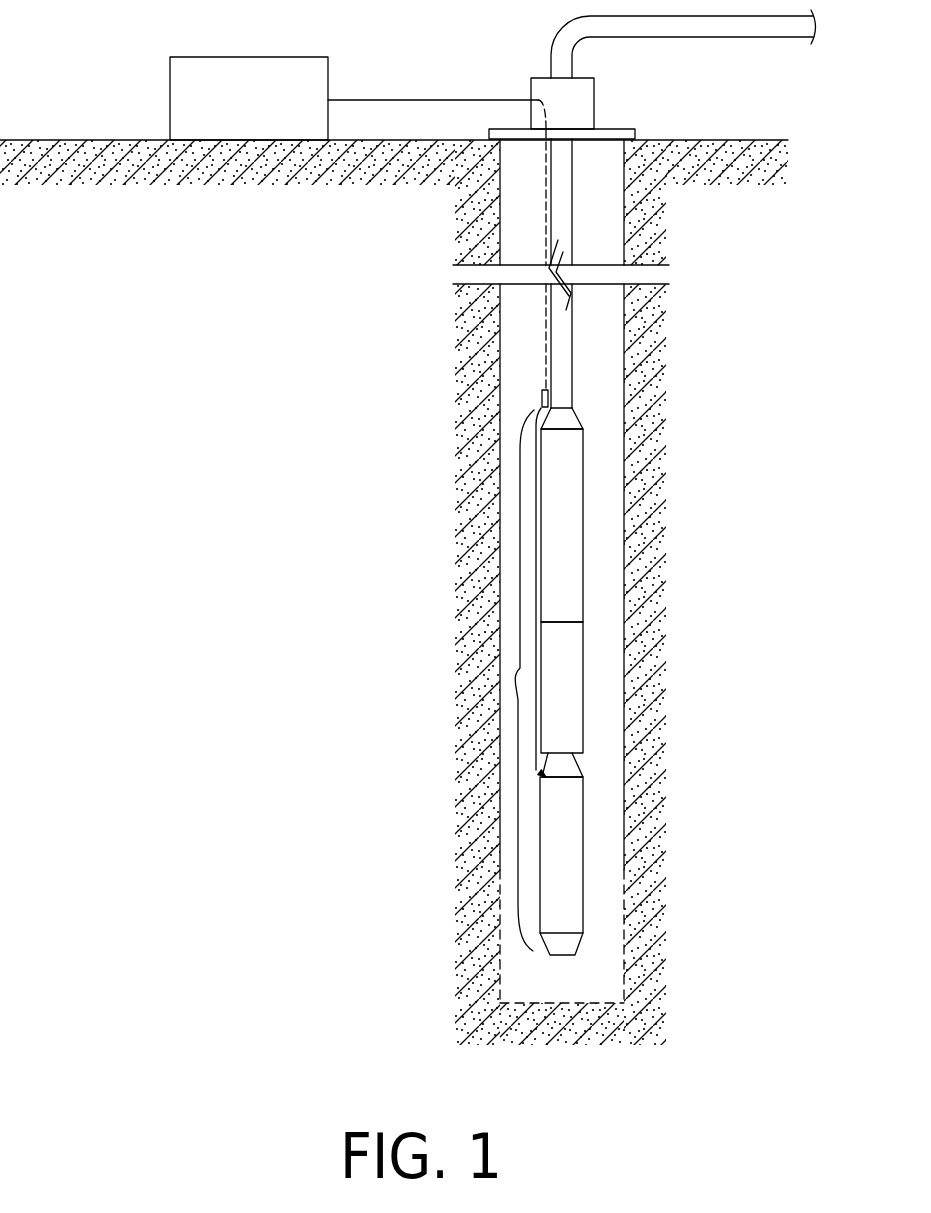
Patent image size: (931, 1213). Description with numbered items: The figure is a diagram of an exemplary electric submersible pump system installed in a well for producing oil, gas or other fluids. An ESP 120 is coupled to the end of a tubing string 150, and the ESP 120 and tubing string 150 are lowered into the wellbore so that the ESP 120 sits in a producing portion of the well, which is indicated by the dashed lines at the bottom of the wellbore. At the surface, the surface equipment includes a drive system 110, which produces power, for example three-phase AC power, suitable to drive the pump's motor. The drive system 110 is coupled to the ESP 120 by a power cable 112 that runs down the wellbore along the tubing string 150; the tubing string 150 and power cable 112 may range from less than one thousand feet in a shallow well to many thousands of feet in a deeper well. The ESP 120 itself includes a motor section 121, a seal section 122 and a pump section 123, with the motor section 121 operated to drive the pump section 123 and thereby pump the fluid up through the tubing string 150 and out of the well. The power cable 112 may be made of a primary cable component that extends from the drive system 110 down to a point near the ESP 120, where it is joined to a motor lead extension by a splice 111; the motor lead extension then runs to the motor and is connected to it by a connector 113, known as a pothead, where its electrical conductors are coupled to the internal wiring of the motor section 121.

The drive system 110 is at (262, 57).
The power cable 112 is at (445, 99).
The tubing string 150 is at (573, 359).
The splice 111 is at (542, 401).
The pump section 123 is at (583, 513).
The seal section 122 is at (583, 684).
The motor section 121 is at (584, 873).
The ESP 120 is at (512, 680).
The connector 113 is at (545, 775).